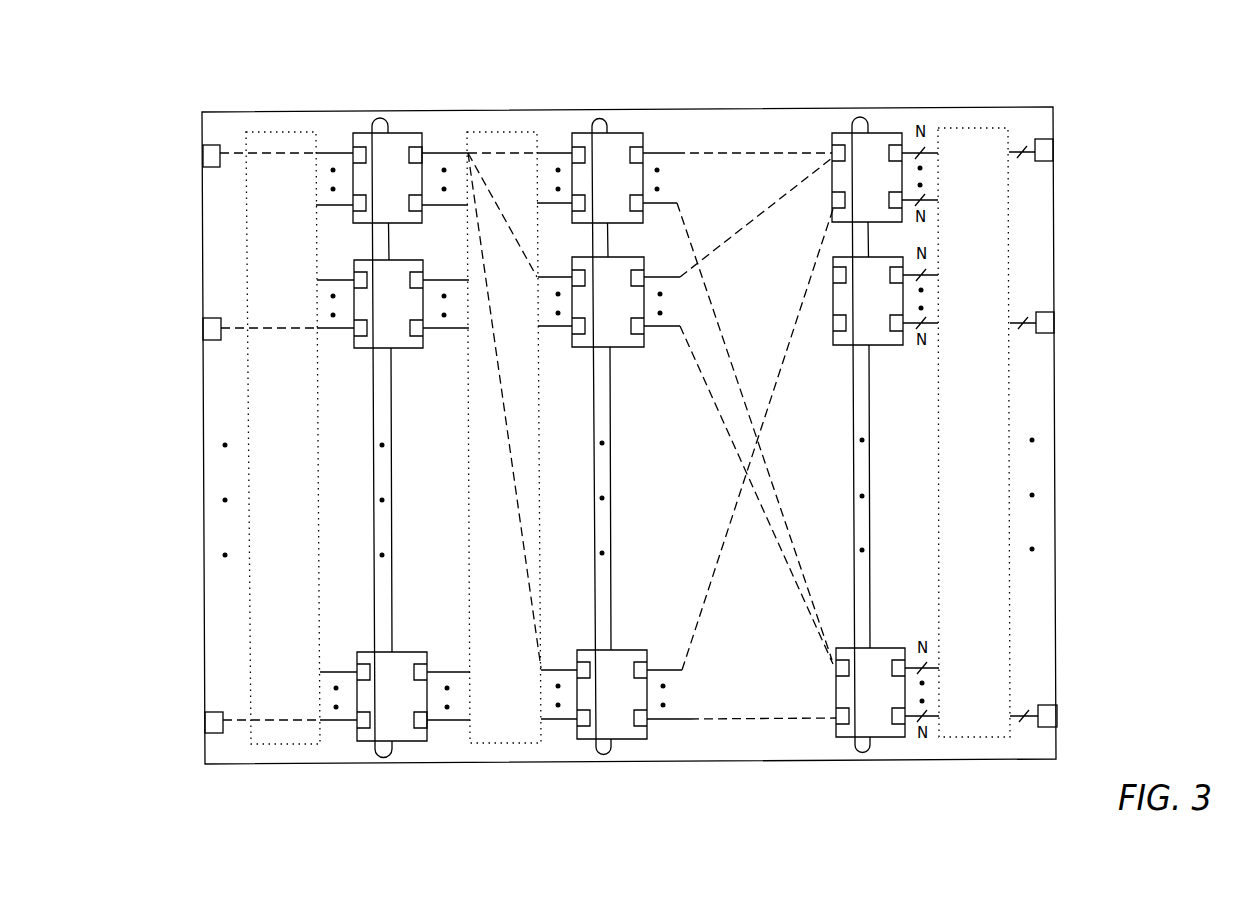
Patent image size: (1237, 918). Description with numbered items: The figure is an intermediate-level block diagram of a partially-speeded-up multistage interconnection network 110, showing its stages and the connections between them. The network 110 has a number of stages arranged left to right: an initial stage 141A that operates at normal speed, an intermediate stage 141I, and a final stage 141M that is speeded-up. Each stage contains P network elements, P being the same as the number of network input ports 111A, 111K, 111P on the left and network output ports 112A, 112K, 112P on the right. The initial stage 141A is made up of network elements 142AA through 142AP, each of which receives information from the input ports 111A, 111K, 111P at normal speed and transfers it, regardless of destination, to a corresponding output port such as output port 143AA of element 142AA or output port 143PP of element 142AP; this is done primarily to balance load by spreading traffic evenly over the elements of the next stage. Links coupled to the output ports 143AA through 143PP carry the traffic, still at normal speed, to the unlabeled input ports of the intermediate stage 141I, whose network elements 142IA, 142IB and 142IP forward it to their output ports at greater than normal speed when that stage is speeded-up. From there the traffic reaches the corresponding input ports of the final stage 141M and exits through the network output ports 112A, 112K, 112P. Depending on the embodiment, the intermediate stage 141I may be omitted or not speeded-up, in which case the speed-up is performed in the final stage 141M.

The multistage interconnection network 110 is at (1118, 102).
The network input port 111A is at (203, 153).
The network input port 111K is at (203, 328).
The network input port 111P is at (205, 720).
The network output port 112A is at (1053, 152).
The network output port 112K is at (1054, 323).
The network output port 112P is at (1057, 716).
The initial stage 141A is at (385, 757).
The intermediate stage 141I is at (605, 757).
The final stage 141M is at (866, 755).
The network element 142AA is at (395, 145).
The output port 143AA is at (421, 151).
The network element 142AP is at (400, 722).
The output port 143PP is at (428, 724).
The network element 142IA is at (617, 145).
The network element 142IB is at (617, 328).
The network element 142IP is at (618, 718).